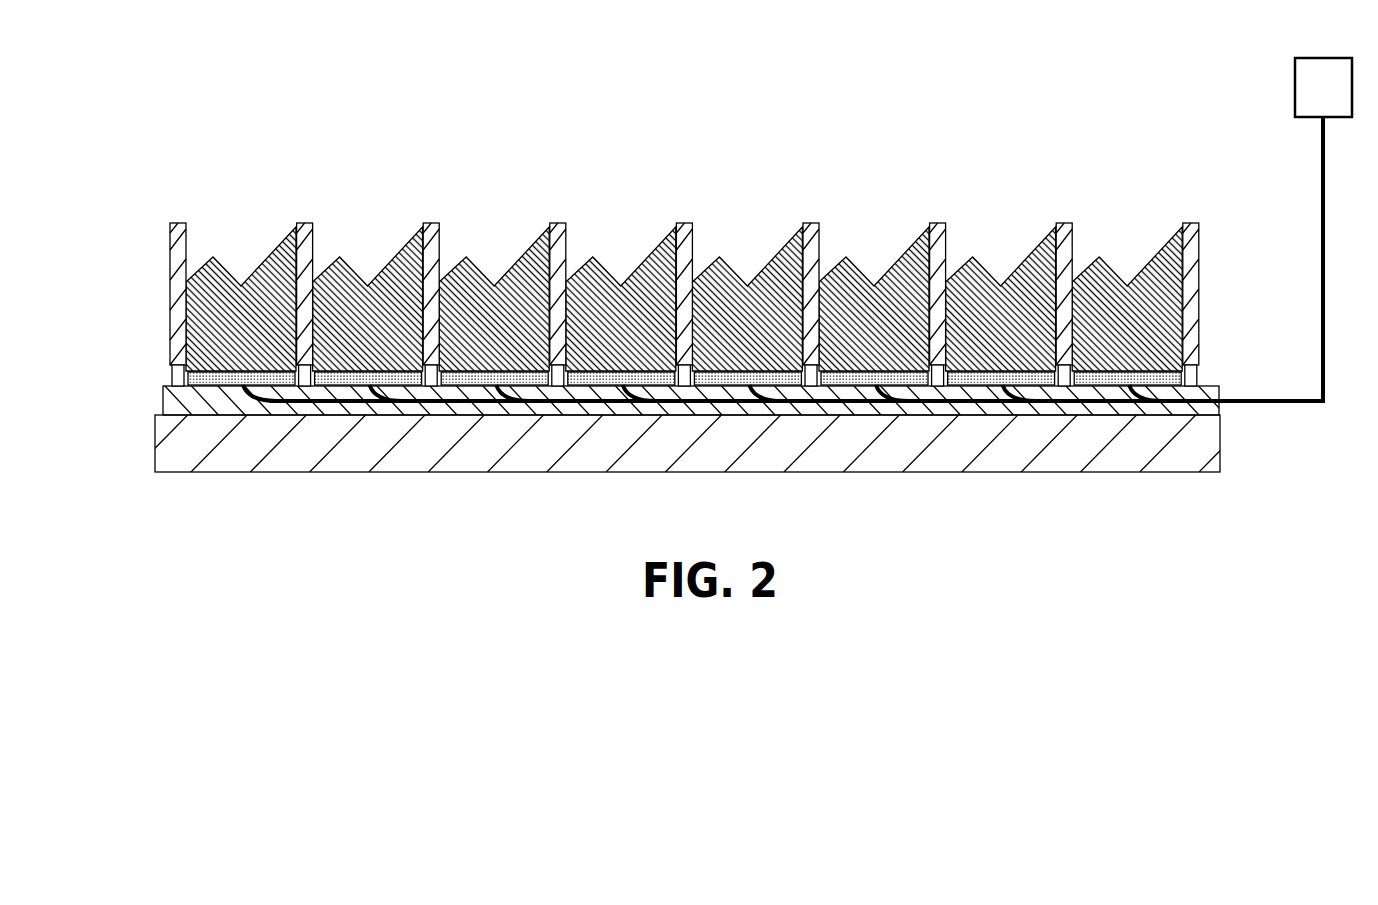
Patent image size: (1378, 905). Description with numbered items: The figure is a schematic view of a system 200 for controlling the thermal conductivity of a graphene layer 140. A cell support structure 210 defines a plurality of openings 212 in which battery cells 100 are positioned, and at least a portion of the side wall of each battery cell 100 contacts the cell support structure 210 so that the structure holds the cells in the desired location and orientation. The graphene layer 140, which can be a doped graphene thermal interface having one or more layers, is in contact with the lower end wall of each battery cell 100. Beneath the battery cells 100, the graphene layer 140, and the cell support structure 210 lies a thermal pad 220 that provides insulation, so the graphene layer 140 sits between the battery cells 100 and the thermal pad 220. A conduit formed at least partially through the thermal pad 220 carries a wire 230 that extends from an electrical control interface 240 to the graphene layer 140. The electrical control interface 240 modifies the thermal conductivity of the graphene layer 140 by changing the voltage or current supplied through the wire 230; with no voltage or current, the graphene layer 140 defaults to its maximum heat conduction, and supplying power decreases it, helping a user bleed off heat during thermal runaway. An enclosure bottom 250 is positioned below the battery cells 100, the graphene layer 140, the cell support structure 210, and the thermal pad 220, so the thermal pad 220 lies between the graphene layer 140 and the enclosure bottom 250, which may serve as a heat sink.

The system 200 is at (719, 270).
The openings 212 is at (632, 271).
The battery cell 100 is at (273, 252).
The cell support structure 210 is at (169, 252).
The graphene layer 140 is at (187, 380).
The thermal pad 220 is at (163, 398).
The wire 230 is at (1325, 380).
The electrical control interface 240 is at (1323, 87).
The enclosure bottom 250 is at (153, 448).